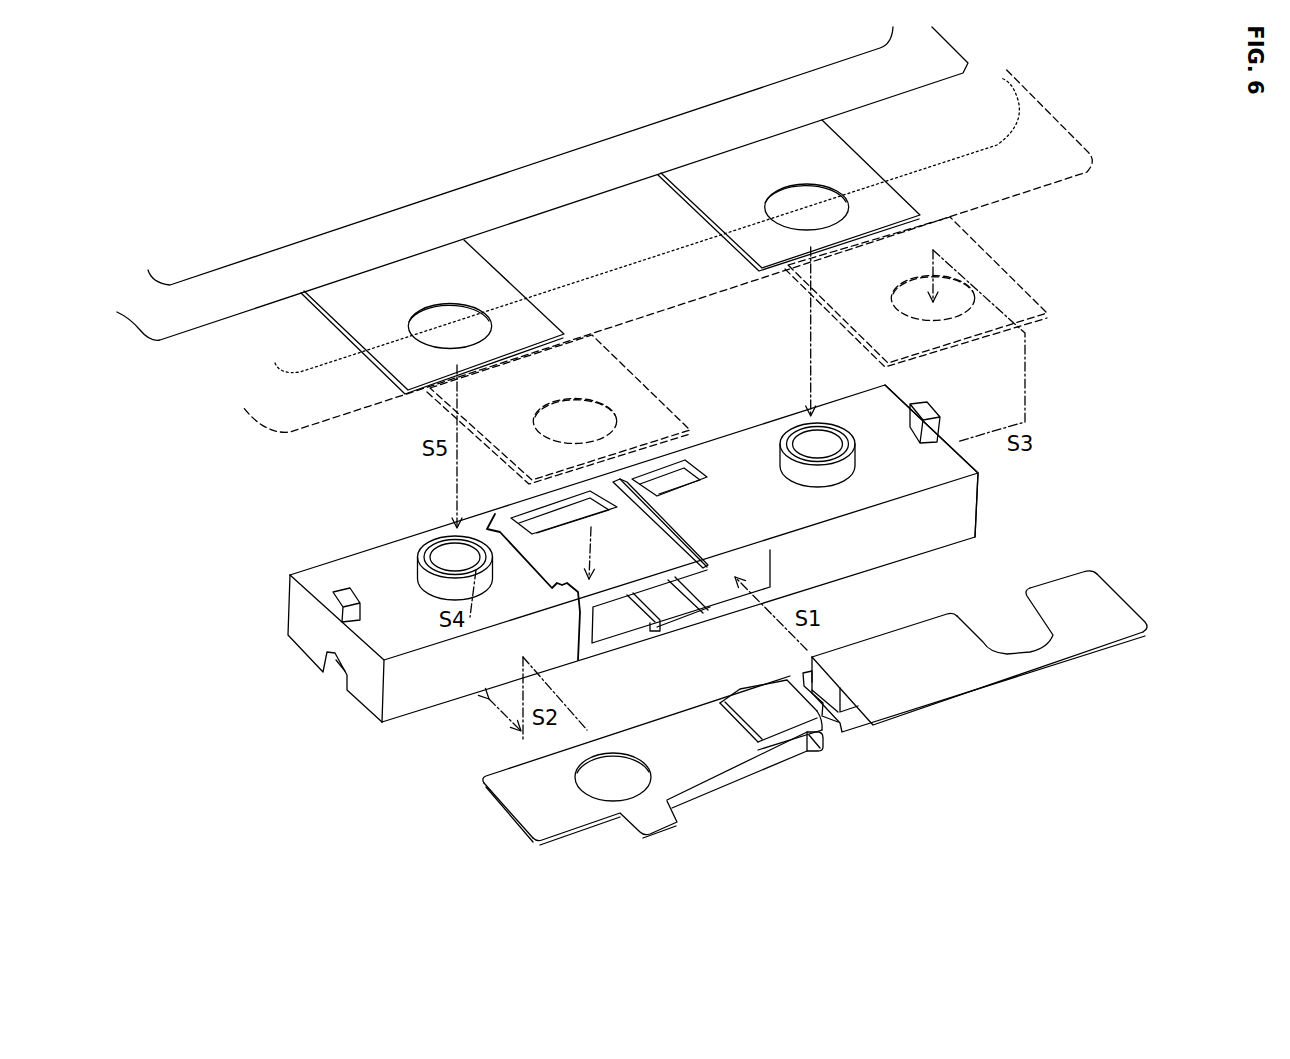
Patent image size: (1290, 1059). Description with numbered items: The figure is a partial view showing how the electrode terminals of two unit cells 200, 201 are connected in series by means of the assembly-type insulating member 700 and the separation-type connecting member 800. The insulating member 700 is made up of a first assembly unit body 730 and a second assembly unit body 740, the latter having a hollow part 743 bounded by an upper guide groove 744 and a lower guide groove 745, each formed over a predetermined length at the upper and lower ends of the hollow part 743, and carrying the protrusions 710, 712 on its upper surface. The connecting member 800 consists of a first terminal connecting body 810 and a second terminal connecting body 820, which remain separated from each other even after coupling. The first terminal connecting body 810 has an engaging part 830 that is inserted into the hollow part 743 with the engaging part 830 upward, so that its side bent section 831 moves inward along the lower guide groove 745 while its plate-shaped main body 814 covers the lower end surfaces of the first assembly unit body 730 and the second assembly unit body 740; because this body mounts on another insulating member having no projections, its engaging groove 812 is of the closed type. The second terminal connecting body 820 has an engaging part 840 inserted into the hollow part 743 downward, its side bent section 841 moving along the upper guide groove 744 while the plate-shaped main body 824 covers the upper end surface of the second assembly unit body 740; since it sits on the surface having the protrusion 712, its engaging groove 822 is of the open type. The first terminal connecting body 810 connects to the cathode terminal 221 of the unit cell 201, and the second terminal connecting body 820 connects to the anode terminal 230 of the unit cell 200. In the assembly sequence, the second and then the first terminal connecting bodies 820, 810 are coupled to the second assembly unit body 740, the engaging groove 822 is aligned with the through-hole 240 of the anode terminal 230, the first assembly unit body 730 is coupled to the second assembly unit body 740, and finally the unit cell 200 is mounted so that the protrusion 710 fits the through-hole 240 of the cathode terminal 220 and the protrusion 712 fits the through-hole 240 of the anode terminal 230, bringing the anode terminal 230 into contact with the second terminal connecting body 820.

The unit cell 200 is at (157, 316).
The unit cell 201 is at (1035, 97).
The cathode terminal 220 is at (357, 298).
The cathode terminal 221 is at (620, 388).
The anode terminal 230 is at (725, 178).
The through-hole 240 is at (457, 317).
The insulating member 700 is at (625, 585).
The protrusion 710 is at (423, 555).
The protrusion 712 is at (840, 470).
The first assembly unit body 730 is at (373, 702).
The second assembly unit body 740 is at (960, 505).
The hollow part 743 is at (773, 568).
The upper guide groove 744 is at (673, 532).
The lower guide groove 745 is at (661, 633).
The connecting member 800 is at (773, 707).
The first terminal connecting body 810 is at (600, 780).
The engaging groove 812 is at (612, 767).
The plate-shaped main body 814 is at (527, 777).
The second terminal connecting body 820 is at (1008, 635).
The engaging groove 822 is at (1020, 620).
The plate-shaped main body 824 is at (1113, 620).
The engaging part 830 is at (740, 755).
The side bent section 831 is at (817, 735).
The engaging part 840 is at (888, 737).
The side bent section 841 is at (830, 720).